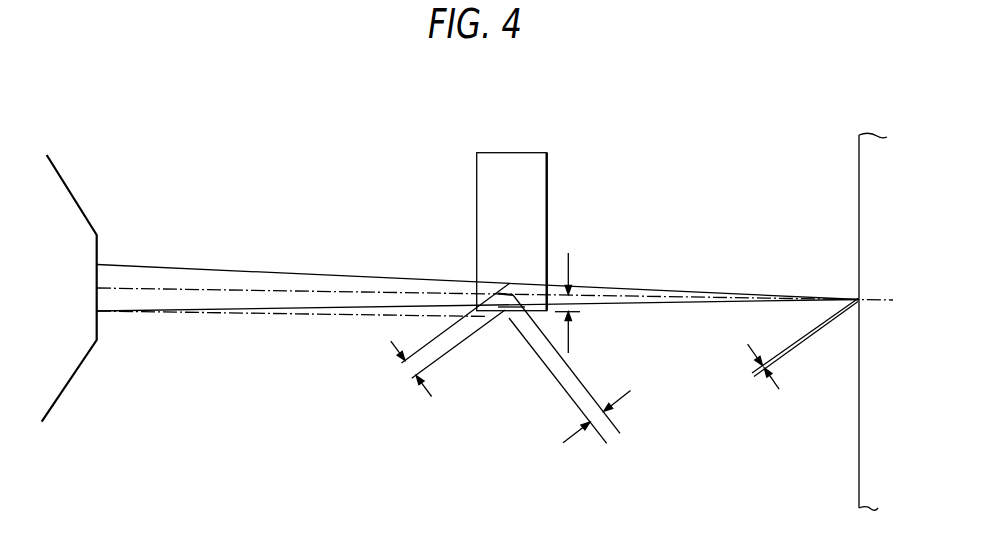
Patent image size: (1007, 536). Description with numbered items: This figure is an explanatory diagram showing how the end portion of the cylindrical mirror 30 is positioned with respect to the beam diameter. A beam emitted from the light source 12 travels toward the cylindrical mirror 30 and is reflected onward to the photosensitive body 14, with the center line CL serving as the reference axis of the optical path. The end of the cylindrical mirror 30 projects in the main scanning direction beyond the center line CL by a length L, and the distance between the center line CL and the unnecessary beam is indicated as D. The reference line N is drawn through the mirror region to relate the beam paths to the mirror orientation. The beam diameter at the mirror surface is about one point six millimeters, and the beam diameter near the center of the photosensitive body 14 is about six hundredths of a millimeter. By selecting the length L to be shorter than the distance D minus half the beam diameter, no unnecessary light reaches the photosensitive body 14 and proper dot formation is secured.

The light source / laser unit 12 is at (73, 193).
The cylindrical mirror 30 is at (548, 195).
The photosensitive body 14 is at (853, 470).
The normal line N is at (330, 316).
The length from the end portion to the central line L is at (570, 260).
The distance between the central line and the unnecessary beam D is at (609, 409).
The center line CL is at (879, 298).